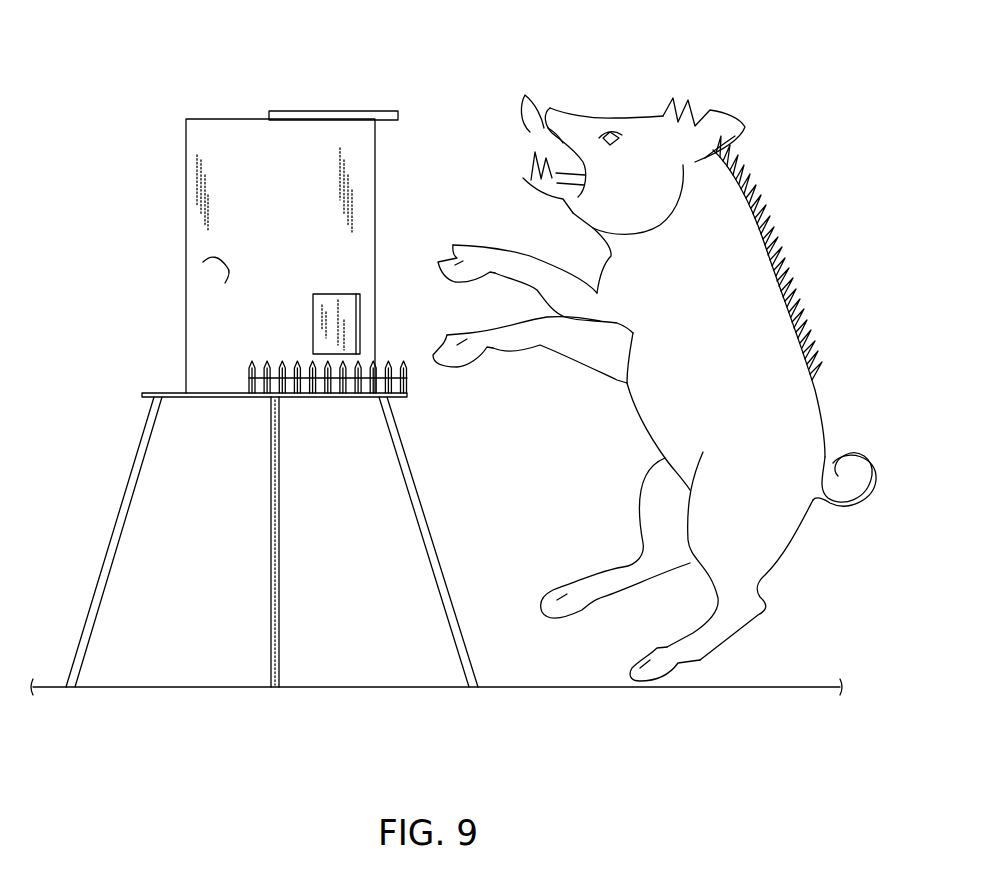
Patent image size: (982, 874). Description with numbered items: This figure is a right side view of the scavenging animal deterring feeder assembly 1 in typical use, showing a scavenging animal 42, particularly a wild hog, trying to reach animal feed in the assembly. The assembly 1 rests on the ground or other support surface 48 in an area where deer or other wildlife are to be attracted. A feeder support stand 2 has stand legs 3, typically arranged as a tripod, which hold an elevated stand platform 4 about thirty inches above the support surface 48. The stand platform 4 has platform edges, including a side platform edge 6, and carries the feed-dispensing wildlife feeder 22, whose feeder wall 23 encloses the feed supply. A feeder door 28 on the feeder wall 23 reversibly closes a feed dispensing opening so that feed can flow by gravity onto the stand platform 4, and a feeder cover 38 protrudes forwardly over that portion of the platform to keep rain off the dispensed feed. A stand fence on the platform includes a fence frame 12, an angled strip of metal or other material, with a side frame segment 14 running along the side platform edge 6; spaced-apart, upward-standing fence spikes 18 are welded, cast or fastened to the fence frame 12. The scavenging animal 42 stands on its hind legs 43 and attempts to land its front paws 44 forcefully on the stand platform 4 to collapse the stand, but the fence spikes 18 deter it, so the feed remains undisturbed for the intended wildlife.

The scavenging animal deterring feeder assembly 1 is at (254, 354).
The feeder support stand 2 is at (254, 542).
The stand leg 3 is at (268, 610).
The stand platform 4 is at (138, 394).
The side platform edge 6 is at (213, 398).
The fence frame 12 is at (357, 357).
The side frame segment 14 is at (333, 398).
The fence spikes 18 is at (282, 361).
The feed-dispensing wildlife feeder 22 is at (177, 172).
The feeder wall 23 is at (203, 262).
The feeder door 28 is at (335, 294).
The feeder cover 38 is at (396, 111).
The scavenging animal 42 is at (638, 388).
The hind legs 43 is at (580, 590).
The front paws 44 is at (470, 337).
The support surface 48 is at (805, 685).